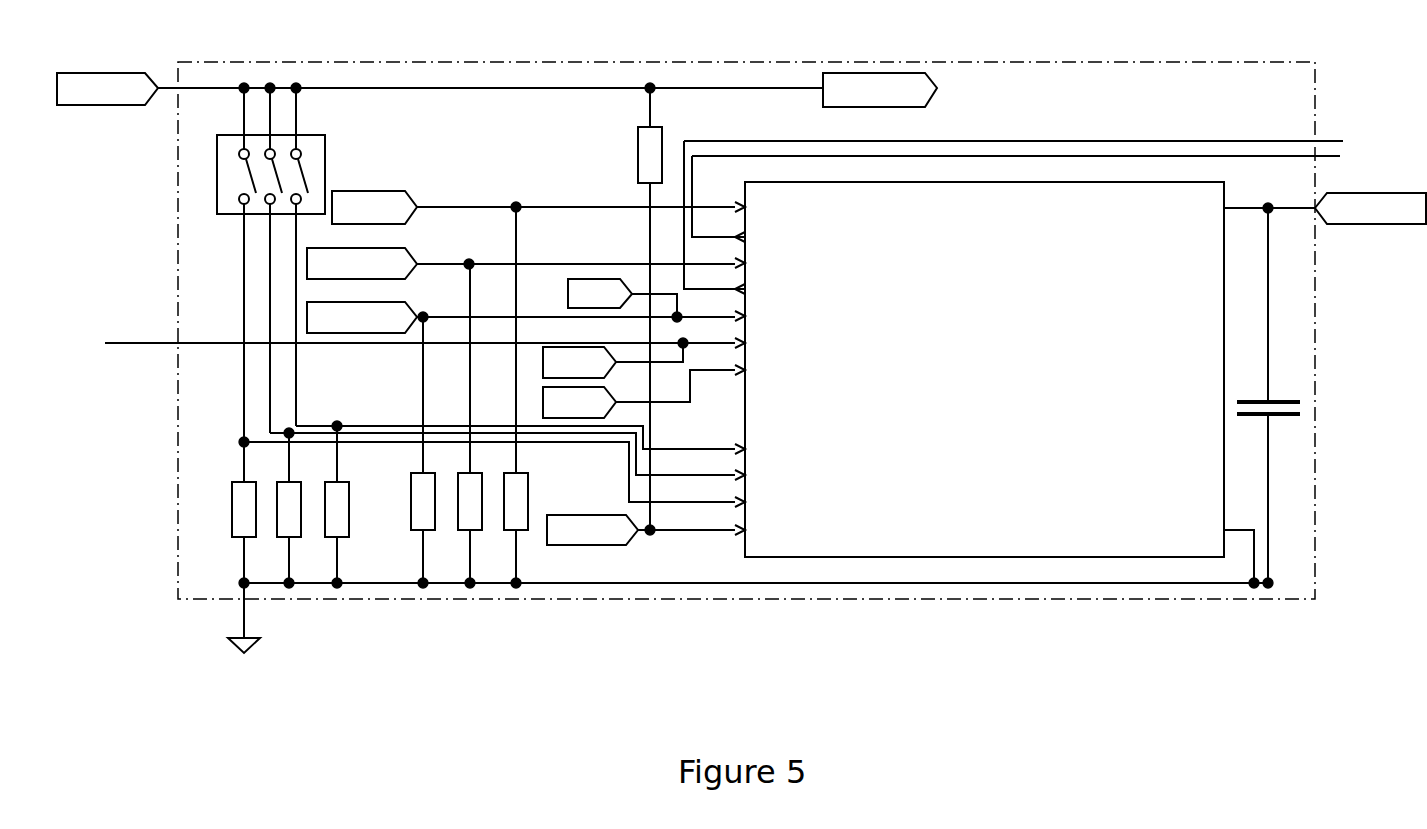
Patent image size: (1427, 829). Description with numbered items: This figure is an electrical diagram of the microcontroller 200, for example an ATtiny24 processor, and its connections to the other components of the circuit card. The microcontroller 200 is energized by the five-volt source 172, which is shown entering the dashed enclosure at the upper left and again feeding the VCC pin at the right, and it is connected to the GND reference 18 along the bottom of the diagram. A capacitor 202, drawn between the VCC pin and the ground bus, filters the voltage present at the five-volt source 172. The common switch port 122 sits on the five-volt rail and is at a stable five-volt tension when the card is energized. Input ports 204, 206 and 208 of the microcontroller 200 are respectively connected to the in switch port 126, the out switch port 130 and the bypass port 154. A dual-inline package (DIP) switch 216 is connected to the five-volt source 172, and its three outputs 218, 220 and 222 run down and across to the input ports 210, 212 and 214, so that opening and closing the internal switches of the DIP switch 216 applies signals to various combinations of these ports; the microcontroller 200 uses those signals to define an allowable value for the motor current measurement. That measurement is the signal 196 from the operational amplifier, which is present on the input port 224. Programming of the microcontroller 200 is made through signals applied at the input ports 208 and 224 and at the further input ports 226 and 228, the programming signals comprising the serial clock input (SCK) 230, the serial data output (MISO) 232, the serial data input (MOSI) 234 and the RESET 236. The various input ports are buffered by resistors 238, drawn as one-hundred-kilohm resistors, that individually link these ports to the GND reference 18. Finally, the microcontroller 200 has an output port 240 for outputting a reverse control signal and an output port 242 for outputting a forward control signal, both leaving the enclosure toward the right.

The 5-volt source 172 is at (120, 73).
The dual-inline package (DIP) switch 216 is at (325, 135).
The output of the DIP switch 222 is at (240, 224).
The output of the DIP switch 220 is at (270, 250).
The output of the DIP switch 218 is at (296, 278).
The ground 18 is at (244, 616).
The resistors 238 is at (638, 156).
The in switch port 126 is at (408, 190).
The out switch port 130 is at (406, 247).
The bypass port 154 is at (406, 302).
The serial clock input (SCK) 230 is at (570, 288).
The serial data output (MISO) 232 is at (543, 365).
The serial data input (MOSI) 234 is at (543, 402).
The RESET 236 is at (574, 515).
The common switch port 122 is at (937, 88).
The signal 196 is at (138, 343).
The output port 240 is at (1337, 141).
The output port 242 is at (1340, 156).
The microcontroller 200 is at (994, 382).
The capacitor 202 is at (1276, 400).
The input port 204 is at (764, 207).
The input port 206 is at (764, 263).
The input port 208 is at (764, 316).
The input port 224 is at (764, 343).
The input port 226 is at (764, 370).
The input port 210 is at (764, 449).
The input port 212 is at (764, 475).
The input port 214 is at (764, 502).
The input port 228 is at (764, 530).